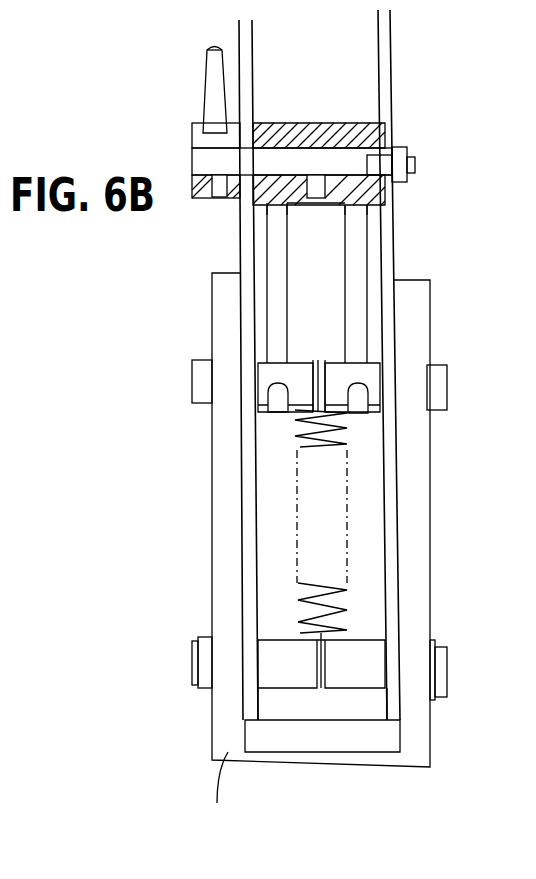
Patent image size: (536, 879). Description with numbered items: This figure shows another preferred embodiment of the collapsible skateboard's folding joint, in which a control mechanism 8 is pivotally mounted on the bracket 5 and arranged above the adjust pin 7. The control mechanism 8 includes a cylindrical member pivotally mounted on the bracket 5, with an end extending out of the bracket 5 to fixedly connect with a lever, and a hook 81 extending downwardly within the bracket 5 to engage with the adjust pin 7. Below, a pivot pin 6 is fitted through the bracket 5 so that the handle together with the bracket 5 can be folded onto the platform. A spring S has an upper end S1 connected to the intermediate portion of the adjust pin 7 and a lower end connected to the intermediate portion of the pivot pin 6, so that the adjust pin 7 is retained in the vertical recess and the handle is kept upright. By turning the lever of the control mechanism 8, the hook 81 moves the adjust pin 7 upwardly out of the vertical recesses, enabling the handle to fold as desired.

The control mechanism 8 is at (215, 98).
The bracket 5 is at (385, 70).
The adjust pin 7 is at (202, 378).
The hook 81 is at (357, 313).
The spring S is at (347, 505).
The pivot pin 6 is at (440, 660).
The upper end of spring S1 is at (323, 697).